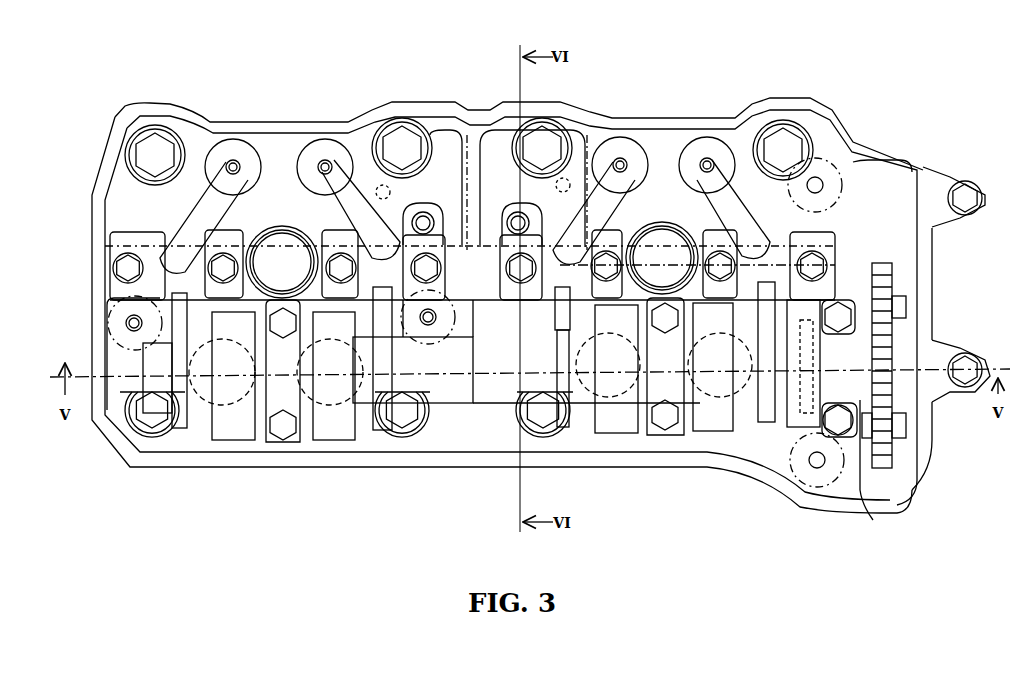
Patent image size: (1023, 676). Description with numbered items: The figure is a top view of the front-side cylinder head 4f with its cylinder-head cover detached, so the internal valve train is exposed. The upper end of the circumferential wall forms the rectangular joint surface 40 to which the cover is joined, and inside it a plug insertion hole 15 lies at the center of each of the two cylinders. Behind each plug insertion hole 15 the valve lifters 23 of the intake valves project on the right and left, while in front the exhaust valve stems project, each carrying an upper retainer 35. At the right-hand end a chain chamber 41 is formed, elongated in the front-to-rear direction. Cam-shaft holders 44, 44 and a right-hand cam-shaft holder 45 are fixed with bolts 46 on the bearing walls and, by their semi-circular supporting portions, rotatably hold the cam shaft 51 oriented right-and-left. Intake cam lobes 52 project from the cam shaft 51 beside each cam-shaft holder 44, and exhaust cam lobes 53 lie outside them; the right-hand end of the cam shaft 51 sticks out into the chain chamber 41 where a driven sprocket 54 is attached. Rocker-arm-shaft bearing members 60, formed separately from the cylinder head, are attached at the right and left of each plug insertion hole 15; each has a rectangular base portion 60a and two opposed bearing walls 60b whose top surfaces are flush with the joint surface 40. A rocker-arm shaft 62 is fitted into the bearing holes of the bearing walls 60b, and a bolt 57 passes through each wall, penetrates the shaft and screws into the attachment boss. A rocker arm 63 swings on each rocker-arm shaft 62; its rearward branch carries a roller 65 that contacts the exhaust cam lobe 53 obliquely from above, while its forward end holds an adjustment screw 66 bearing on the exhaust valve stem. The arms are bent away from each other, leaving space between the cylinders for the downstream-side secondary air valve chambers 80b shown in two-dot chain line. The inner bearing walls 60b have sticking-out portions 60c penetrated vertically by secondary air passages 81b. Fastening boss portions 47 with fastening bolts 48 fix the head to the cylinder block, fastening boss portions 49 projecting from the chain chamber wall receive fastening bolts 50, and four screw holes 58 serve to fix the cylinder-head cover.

The front-side cylinder head 4f is at (486, 72).
The plug insertion hole 15 is at (472, 260).
The valve lifter 23 is at (200, 440).
The upper retainer 35 is at (230, 139).
The joint surface 40 is at (95, 258).
The chain chamber 41 is at (882, 197).
The cam-shaft holder 44 is at (255, 445).
The cam-shaft holder 45 is at (872, 470).
The bolt 46 is at (283, 442).
The fastening boss portion 47 is at (138, 133).
The fastening bolt 48 is at (150, 155).
The fastening boss portion 49 is at (975, 212).
The fastening bolt 50 is at (965, 195).
The cam shaft 51 is at (490, 410).
The intake cam lobe 52 is at (230, 442).
The exhaust cam lobe 53 is at (170, 435).
The driven sprocket 54 is at (885, 475).
The bolt 57 is at (125, 270).
The screw hole 58 is at (818, 182).
The rocker-arm-shaft bearing member 60 is at (115, 250).
The rectangular base portion 60a is at (175, 232).
The bearing wall 60b is at (127, 232).
The sticking-out portion 60c is at (432, 213).
The rocker-arm shaft 62 is at (165, 232).
The rocker arm 63 is at (208, 210).
The roller 65 is at (150, 362).
The adjustment screw 66 is at (236, 160).
The downstream-side secondary air valve chamber 80b is at (442, 130).
The secondary air passage 81b is at (425, 205).